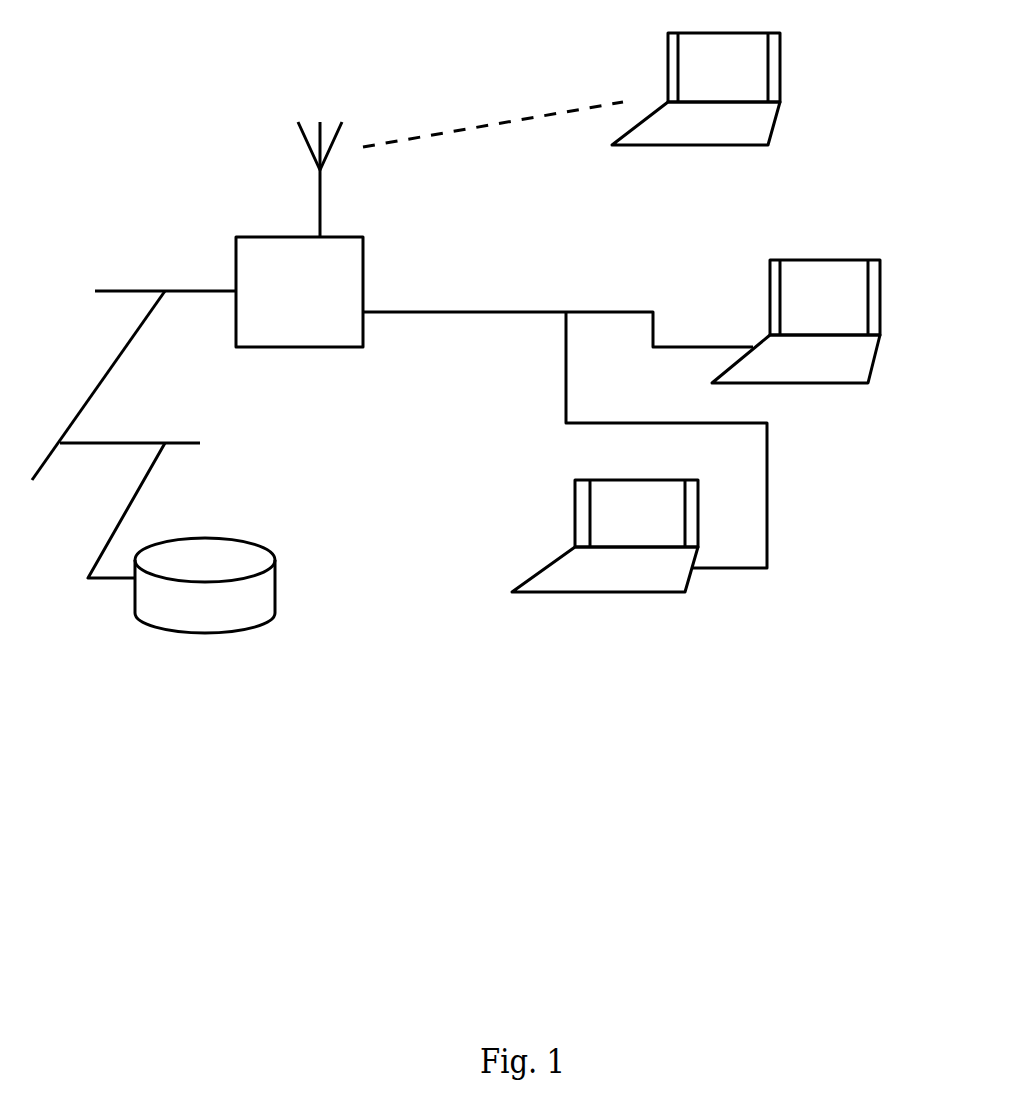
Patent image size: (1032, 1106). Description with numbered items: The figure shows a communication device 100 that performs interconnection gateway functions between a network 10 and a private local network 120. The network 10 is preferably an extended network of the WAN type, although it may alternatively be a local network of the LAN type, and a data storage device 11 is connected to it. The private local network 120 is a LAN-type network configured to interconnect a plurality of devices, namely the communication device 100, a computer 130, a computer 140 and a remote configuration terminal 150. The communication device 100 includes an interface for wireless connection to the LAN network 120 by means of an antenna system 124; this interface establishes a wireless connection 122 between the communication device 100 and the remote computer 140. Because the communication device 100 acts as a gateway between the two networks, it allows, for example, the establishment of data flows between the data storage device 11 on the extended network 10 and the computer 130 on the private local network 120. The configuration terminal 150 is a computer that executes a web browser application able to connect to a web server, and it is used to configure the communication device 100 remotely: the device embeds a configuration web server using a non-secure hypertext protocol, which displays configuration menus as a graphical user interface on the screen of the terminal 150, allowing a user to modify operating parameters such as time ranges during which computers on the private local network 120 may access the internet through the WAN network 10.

The network 10 is at (183, 290).
The data storage device 11 is at (203, 617).
The communication device 100 is at (278, 330).
The private local network 120 is at (503, 310).
The wireless connection 122 is at (492, 125).
The antenna system 124 is at (308, 120).
The computer 130 is at (827, 368).
The remote computer 140 is at (738, 128).
The remote configuration terminal 150 is at (608, 580).